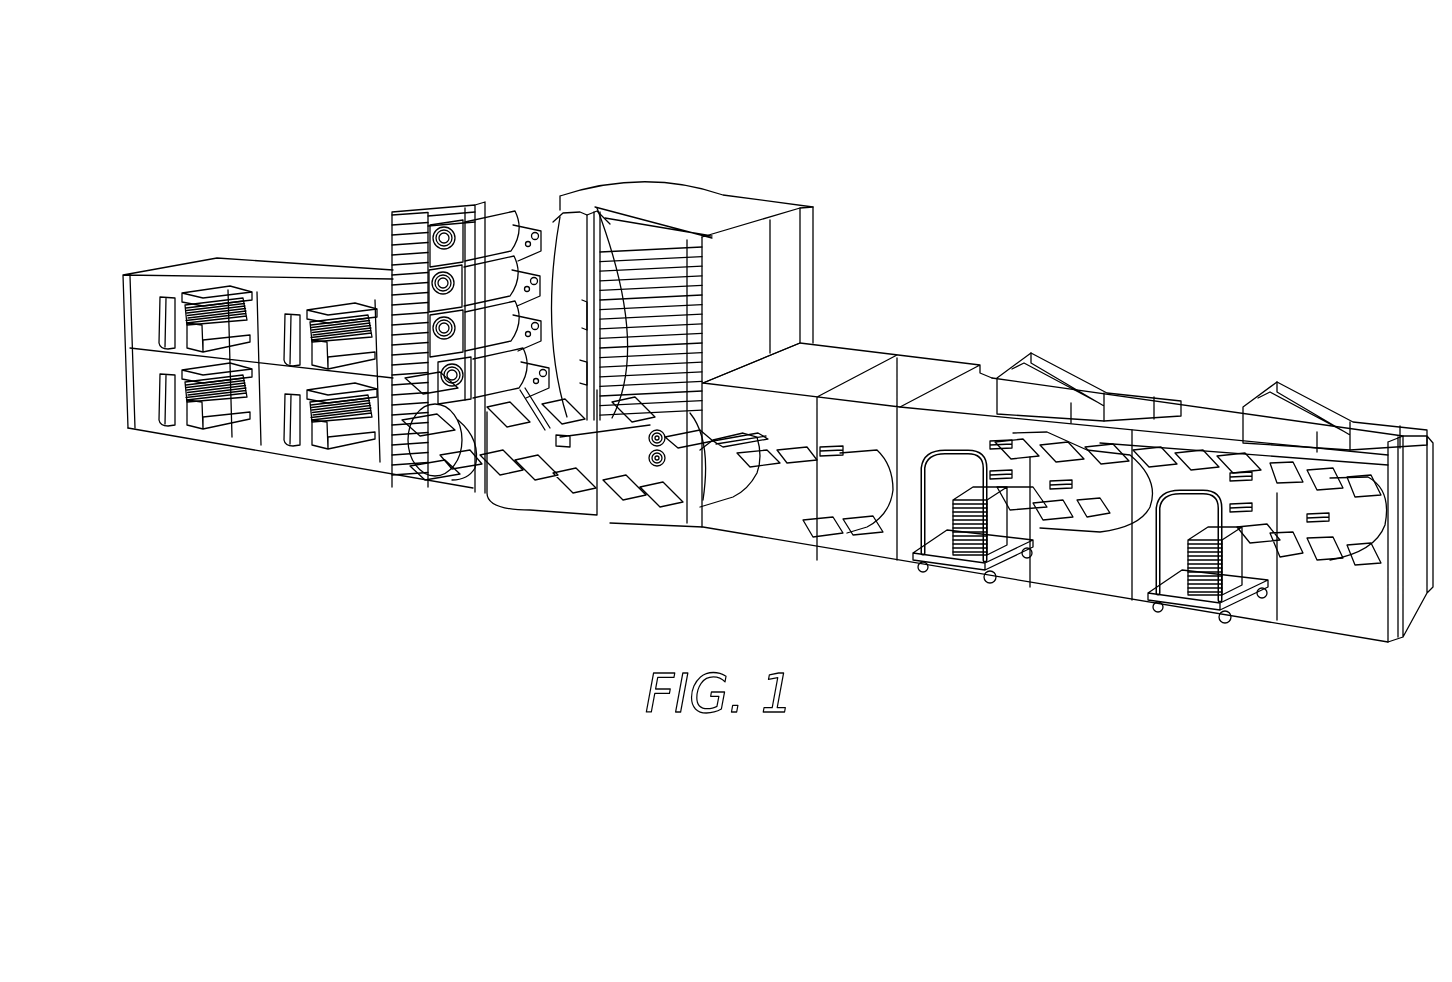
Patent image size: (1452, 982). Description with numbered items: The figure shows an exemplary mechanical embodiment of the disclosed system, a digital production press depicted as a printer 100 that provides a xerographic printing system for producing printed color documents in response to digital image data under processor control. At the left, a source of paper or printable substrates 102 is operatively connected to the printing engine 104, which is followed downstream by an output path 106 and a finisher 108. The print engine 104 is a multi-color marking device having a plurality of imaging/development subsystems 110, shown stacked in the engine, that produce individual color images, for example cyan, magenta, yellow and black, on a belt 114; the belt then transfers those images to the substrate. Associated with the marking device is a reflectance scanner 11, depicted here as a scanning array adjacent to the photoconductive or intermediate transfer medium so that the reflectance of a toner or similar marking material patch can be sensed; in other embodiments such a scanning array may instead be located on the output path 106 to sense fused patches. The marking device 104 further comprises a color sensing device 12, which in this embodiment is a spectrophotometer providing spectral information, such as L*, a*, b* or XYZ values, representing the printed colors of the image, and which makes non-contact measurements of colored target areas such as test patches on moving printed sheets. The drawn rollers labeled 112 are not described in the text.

The printer 100 is at (353, 119).
The source of paper or printable substrates 102 is at (213, 291).
The printing engine 104 is at (690, 190).
The output path 106 is at (856, 450).
The finisher 108 is at (1115, 445).
The imaging/development subsystems 110 is at (455, 225).
The transport rollers 112 is at (662, 448).
The belt 114 is at (578, 238).
The reflectance scanner 11 is at (700, 390).
The color sensing device 12 is at (742, 436).